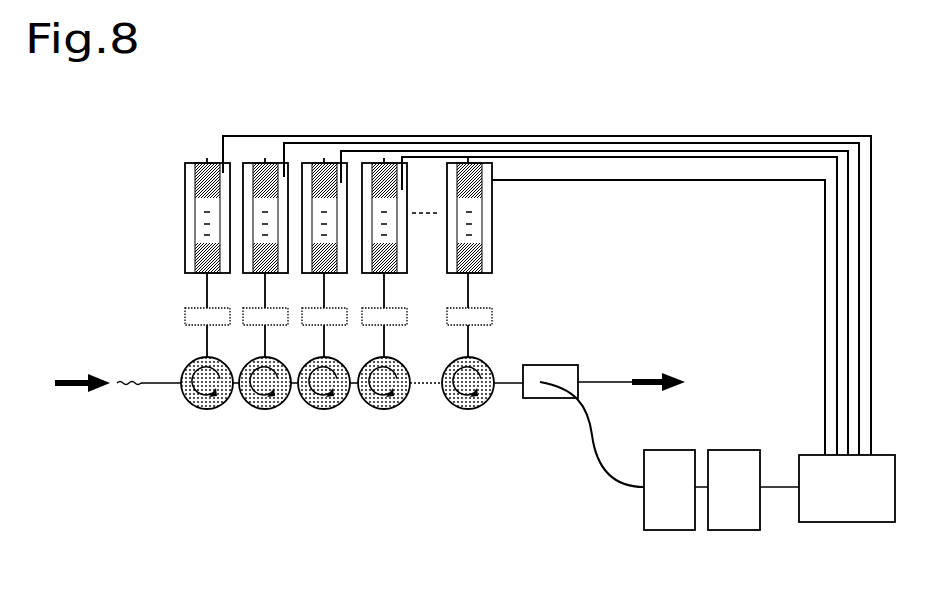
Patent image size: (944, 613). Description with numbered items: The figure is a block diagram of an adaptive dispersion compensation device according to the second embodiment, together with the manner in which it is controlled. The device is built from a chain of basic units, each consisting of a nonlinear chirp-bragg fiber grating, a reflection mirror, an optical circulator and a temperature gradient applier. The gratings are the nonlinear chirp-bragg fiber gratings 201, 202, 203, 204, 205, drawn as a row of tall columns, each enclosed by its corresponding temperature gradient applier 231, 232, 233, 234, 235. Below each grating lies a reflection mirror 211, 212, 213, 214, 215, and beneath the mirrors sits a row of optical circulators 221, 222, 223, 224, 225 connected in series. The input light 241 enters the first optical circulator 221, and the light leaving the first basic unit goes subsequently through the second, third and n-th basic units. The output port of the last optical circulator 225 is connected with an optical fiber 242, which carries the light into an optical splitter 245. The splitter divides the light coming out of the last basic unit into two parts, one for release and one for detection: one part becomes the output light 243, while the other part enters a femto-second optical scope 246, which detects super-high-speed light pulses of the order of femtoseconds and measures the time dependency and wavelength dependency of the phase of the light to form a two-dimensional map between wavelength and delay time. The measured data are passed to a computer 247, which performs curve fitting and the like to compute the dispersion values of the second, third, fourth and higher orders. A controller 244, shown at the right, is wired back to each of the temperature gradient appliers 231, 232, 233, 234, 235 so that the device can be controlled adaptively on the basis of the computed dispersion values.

The nonlinear chirp-bragg fiber grating #1 201 is at (205, 200).
The nonlinear chirp-bragg fiber grating #2 202 is at (258, 165).
The nonlinear chirp-bragg fiber grating #3 203 is at (327, 165).
The nonlinear chirp-bragg fiber grating #4 204 is at (387, 165).
The nonlinear chirp-bragg fiber grating #n 205 is at (483, 165).
The reflection mirror #1 211 is at (200, 315).
The reflection mirror #2 212 is at (272, 320).
The reflection mirror #3 213 is at (328, 312).
The reflection mirror #4 214 is at (392, 312).
The reflection mirror #n 215 is at (470, 315).
The optical circulator #1 221 is at (197, 398).
The optical circulator #2 222 is at (262, 407).
The optical circulator #3 223 is at (322, 409).
The optical circulator #4 224 is at (383, 409).
The optical circulator #n 225 is at (467, 409).
The temperature gradient applier #1 231 is at (220, 210).
The temperature gradient applier #2 232 is at (283, 227).
The temperature gradient applier #3 233 is at (342, 232).
The temperature gradient applier #4 234 is at (397, 205).
The temperature gradient applier #n 235 is at (483, 227).
The input light 241 is at (66, 391).
The optical fiber 242 is at (510, 383).
The output light 243 is at (645, 372).
The controller 244 is at (808, 522).
The optical splitter 245 is at (575, 387).
The femto-second optical scope 246 is at (660, 510).
The computer 247 is at (737, 515).